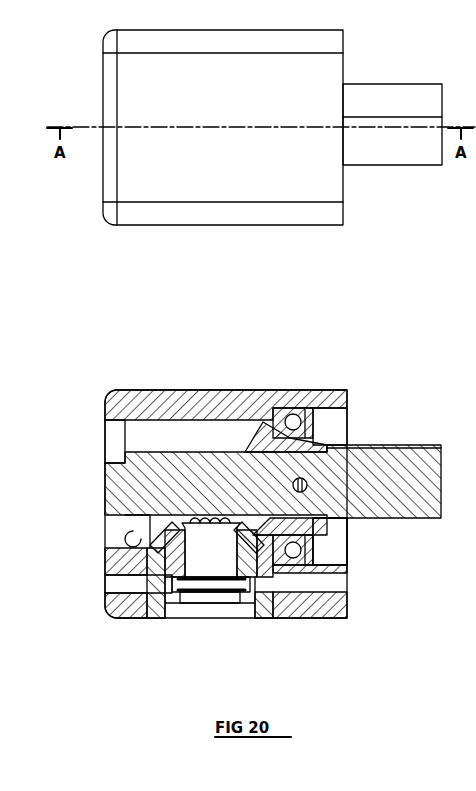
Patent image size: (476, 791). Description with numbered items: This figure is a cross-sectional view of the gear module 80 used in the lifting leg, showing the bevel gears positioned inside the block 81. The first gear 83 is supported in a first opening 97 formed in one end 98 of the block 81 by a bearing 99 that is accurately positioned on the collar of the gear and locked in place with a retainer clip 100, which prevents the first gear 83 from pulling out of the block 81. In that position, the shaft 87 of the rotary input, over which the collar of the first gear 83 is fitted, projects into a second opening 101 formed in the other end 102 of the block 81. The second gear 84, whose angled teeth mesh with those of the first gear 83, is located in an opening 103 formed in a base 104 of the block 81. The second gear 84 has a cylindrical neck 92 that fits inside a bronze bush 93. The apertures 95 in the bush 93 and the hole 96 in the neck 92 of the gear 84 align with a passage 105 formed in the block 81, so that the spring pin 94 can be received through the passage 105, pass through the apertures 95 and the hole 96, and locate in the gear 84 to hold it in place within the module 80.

The module 80 is at (103, 400).
The block 81 is at (167, 389).
The first gear 83 is at (322, 442).
The second gear 84 is at (185, 604).
The shaft 87 is at (110, 492).
The cylindrical neck 92 is at (250, 600).
The bronze bush 93 is at (268, 612).
The spring pin 94 is at (217, 595).
The apertures 95 is at (108, 614).
The hole 96 is at (152, 602).
The first opening 97 is at (356, 545).
The one end 98 is at (347, 397).
The bearing 99 is at (290, 411).
The retainer clip 100 is at (319, 551).
The second opening 101 is at (103, 445).
The other end 102 is at (106, 563).
The opening 103 is at (200, 604).
The base 104 is at (322, 615).
The passage 105 is at (104, 583).